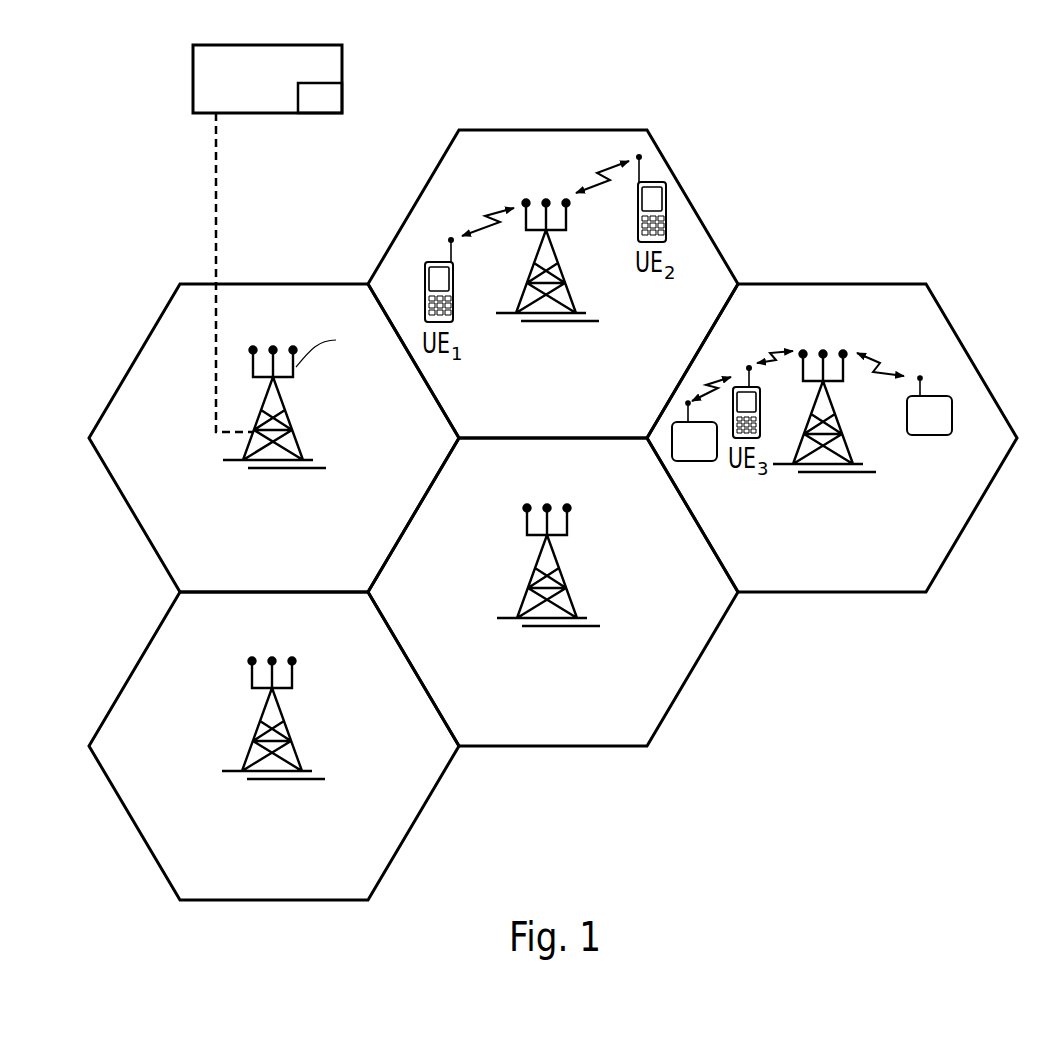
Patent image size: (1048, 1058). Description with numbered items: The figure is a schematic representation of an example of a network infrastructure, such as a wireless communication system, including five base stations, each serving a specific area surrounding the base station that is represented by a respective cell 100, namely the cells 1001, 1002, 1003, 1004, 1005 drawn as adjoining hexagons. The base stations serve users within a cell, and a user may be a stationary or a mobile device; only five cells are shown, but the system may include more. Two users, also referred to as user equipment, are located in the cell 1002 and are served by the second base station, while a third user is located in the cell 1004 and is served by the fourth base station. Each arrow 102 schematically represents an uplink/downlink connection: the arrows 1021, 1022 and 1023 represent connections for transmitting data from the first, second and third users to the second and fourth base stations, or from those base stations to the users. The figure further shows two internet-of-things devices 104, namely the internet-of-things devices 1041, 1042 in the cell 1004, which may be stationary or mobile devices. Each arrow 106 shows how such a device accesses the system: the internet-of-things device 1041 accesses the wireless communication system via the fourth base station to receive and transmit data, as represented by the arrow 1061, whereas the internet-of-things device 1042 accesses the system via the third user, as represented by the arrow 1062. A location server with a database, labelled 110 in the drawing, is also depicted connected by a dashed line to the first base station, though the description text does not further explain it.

The cell 100 is at (553, 515).
The cell 1001 is at (274, 438).
The cell 1002 is at (553, 284).
The cell 1003 is at (274, 746).
The cell 1004 is at (832, 438).
The cell 1005 is at (553, 592).
The arrow 102 is at (654, 209).
The arrow 1021 is at (498, 208).
The arrow 1022 is at (610, 165).
The arrow 1023 is at (767, 350).
The IoT device 104 is at (840, 517).
The IoT device 1041 is at (928, 435).
The IoT device 1042 is at (698, 461).
The arrow 106 is at (816, 300).
The arrow 1061 is at (873, 353).
The arrow 1062 is at (723, 386).
The location server 110 is at (268, 113).